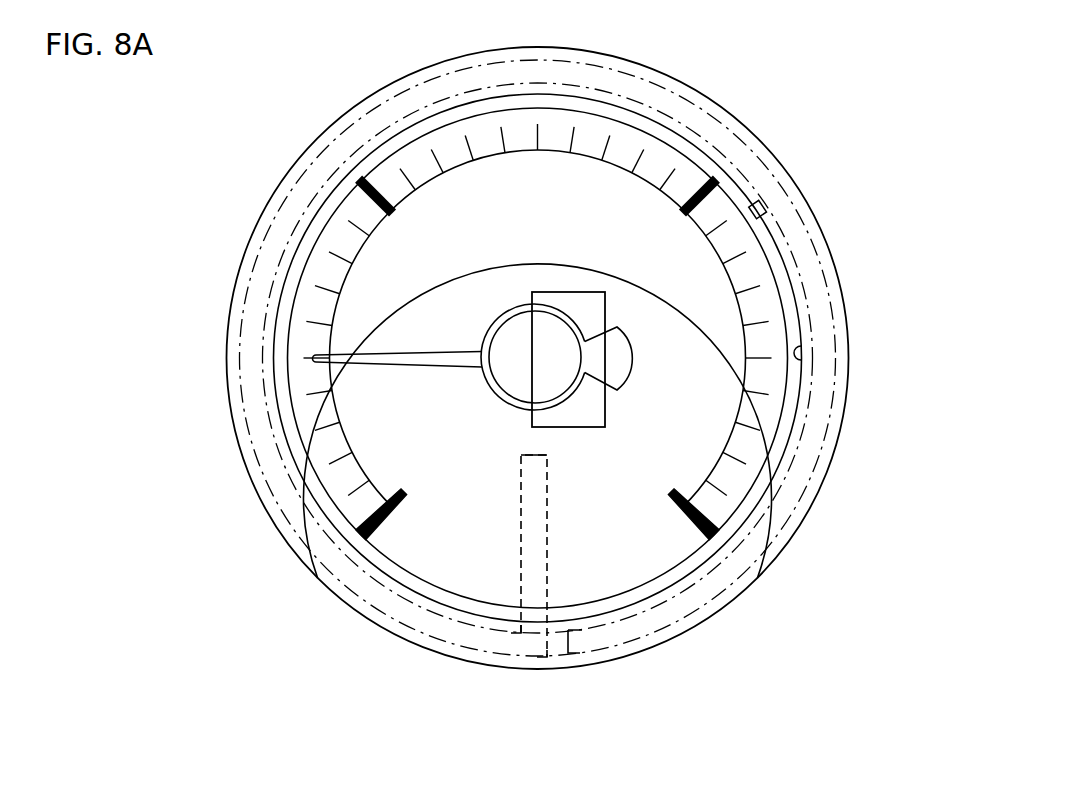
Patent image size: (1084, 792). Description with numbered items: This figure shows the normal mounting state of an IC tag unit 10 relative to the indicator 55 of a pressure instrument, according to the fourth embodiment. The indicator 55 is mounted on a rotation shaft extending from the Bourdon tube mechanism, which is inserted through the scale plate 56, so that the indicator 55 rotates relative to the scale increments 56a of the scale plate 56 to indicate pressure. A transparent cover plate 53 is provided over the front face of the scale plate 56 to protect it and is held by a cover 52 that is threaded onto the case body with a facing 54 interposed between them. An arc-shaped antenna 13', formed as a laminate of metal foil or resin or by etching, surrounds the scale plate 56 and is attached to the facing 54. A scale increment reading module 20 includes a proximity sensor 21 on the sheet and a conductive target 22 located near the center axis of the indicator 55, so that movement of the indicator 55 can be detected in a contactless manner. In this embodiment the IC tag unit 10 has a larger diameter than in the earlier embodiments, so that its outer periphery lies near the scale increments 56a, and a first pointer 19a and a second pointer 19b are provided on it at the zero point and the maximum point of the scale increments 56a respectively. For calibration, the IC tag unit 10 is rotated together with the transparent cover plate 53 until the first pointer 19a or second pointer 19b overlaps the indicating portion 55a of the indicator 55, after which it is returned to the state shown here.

The IC tag unit 10 is at (427, 588).
The antenna 13' is at (794, 157).
The first pointer 19a is at (375, 523).
The second pointer 19b is at (702, 517).
The scale increment reading module 20 is at (693, 499).
The proximity sensor 21 is at (572, 430).
The conductive target 22 is at (558, 360).
The cover 52 is at (847, 430).
The transparent cover plate 53 is at (498, 550).
The facing 54 is at (803, 354).
The indicator 55 is at (358, 315).
The indicating portion 55a is at (352, 353).
The scale plate 56 is at (531, 337).
The scale increments 56a is at (365, 197).